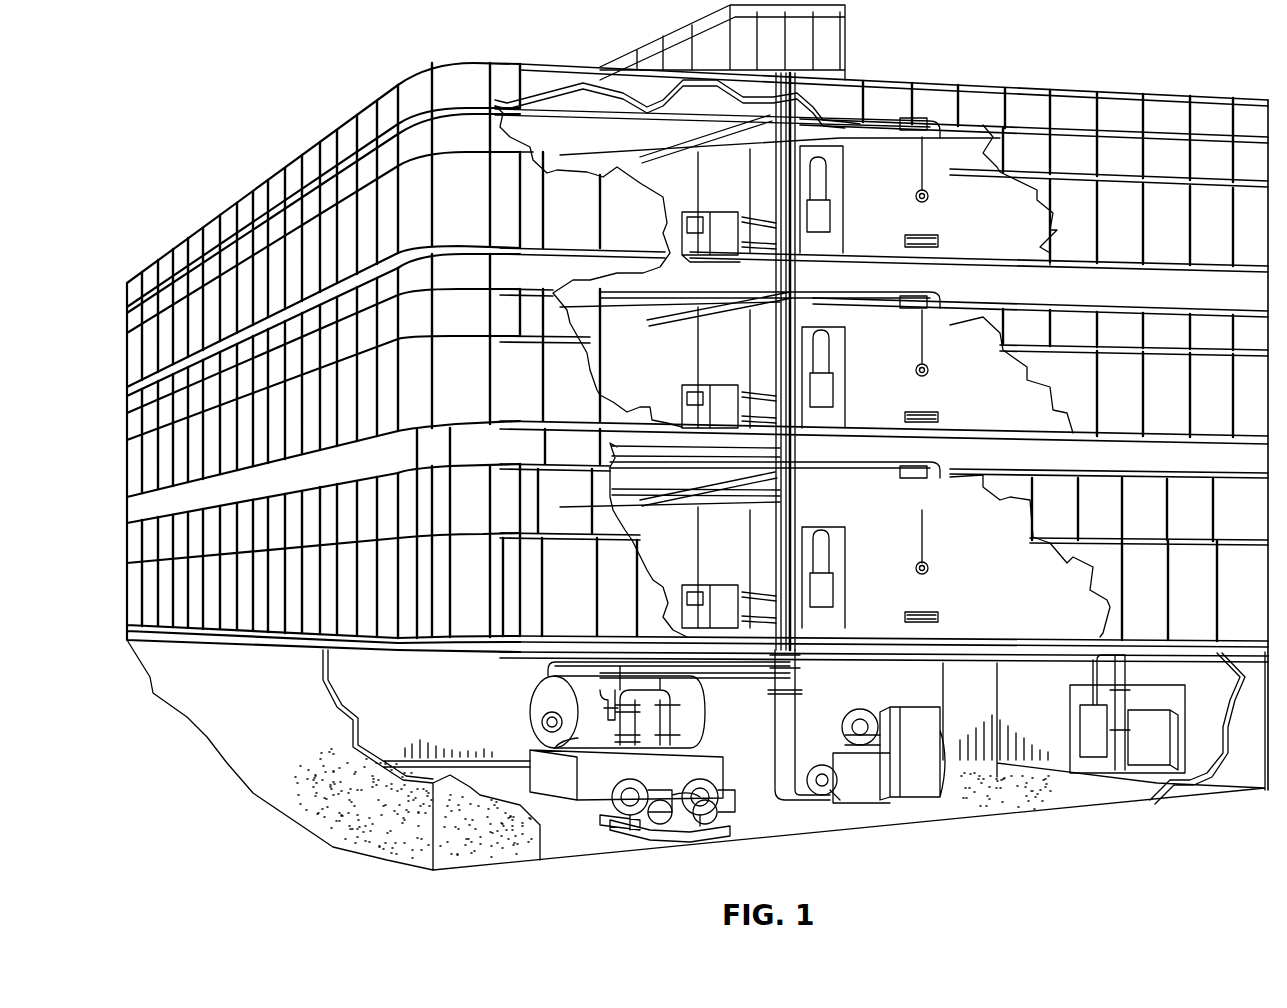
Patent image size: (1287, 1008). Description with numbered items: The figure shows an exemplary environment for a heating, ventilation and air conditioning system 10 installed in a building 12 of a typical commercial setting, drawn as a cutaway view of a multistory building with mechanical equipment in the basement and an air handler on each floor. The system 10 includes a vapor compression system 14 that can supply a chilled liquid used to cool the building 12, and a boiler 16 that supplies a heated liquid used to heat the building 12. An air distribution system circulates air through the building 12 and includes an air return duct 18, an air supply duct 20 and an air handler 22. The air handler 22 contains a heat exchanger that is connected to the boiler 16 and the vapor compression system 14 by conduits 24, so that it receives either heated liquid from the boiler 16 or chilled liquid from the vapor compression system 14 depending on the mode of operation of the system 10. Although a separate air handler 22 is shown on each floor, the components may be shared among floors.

The heating, ventilation and air conditioning system 10 is at (1025, 834).
The building 12 is at (1043, 90).
The vapor compression system 14 is at (905, 795).
The boiler 16 is at (530, 700).
The air return duct 18 is at (684, 428).
The air supply duct 20 is at (650, 158).
The air handler 22 is at (700, 394).
The conduits 24 is at (800, 640).